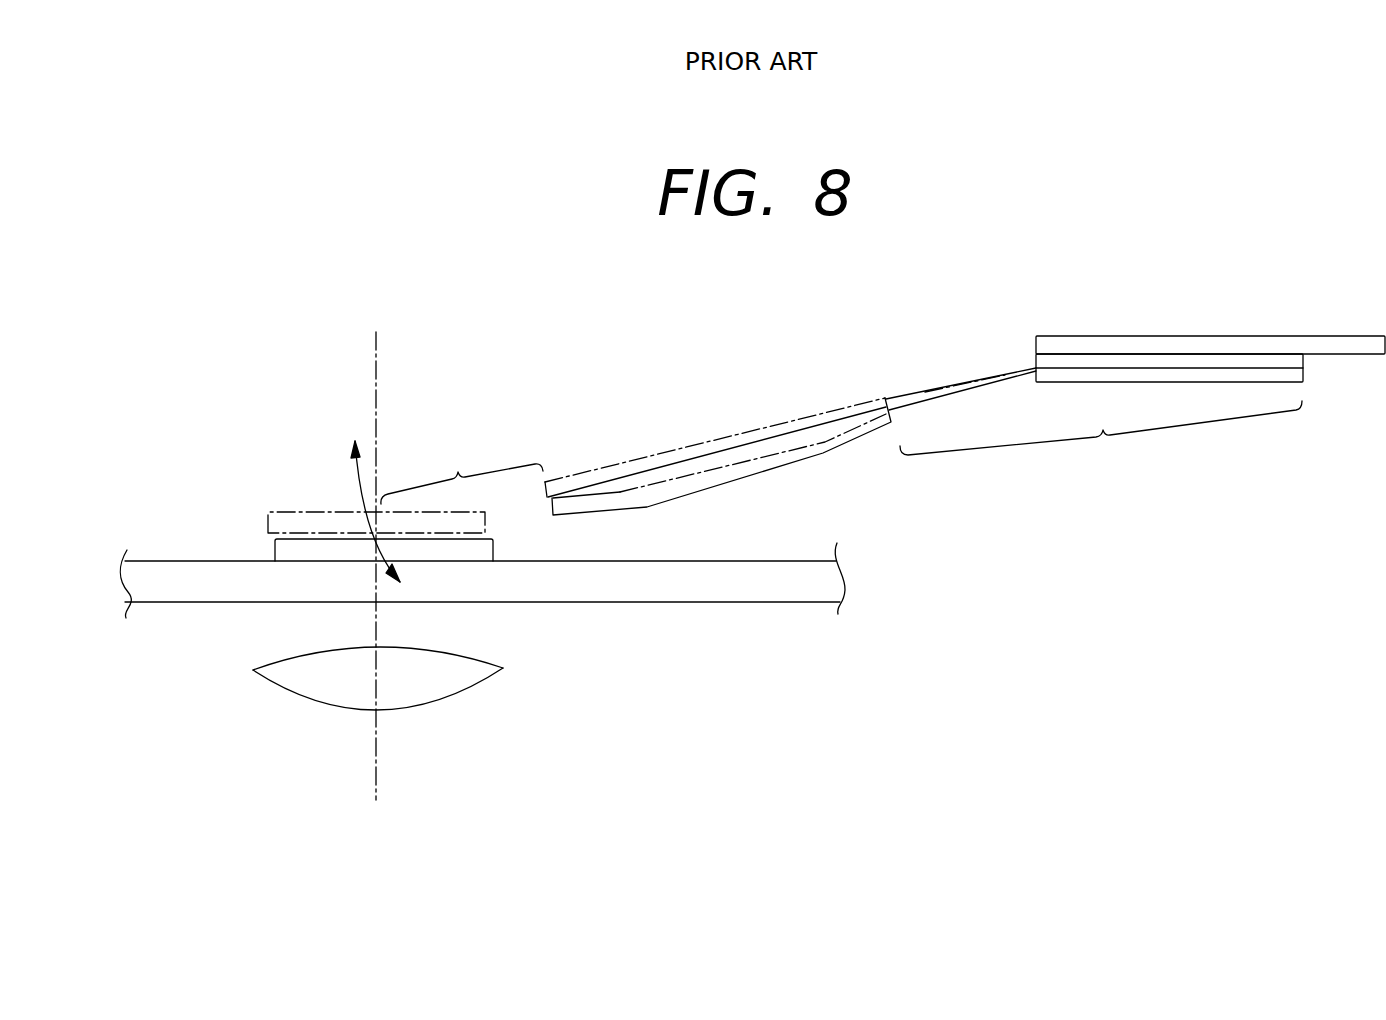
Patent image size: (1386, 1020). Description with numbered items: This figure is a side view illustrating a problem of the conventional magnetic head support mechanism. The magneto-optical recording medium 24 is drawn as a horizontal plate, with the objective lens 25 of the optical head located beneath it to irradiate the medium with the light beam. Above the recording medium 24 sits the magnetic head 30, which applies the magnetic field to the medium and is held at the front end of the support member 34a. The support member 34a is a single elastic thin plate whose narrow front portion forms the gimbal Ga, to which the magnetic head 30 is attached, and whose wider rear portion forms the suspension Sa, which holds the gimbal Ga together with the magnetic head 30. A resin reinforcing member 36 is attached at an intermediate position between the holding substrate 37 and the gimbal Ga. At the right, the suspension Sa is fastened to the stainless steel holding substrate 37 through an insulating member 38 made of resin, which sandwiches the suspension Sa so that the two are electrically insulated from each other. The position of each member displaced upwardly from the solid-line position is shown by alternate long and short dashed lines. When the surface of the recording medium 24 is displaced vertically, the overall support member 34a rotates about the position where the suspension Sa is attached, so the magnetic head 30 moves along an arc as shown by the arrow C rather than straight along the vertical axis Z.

The magneto-optical recording medium 24 is at (768, 587).
The objective lens 25 is at (445, 685).
The magnetic head 30 is at (300, 553).
The support member 34a is at (935, 395).
The reinforcing member 36 is at (752, 452).
The holding substrate 37 is at (1117, 345).
The insulating member 38 is at (1265, 358).
The gimbal Ga is at (462, 472).
The suspension Sa is at (1101, 437).
The Z axis Z is at (375, 549).
The arrow indicating arc displacement C is at (371, 495).